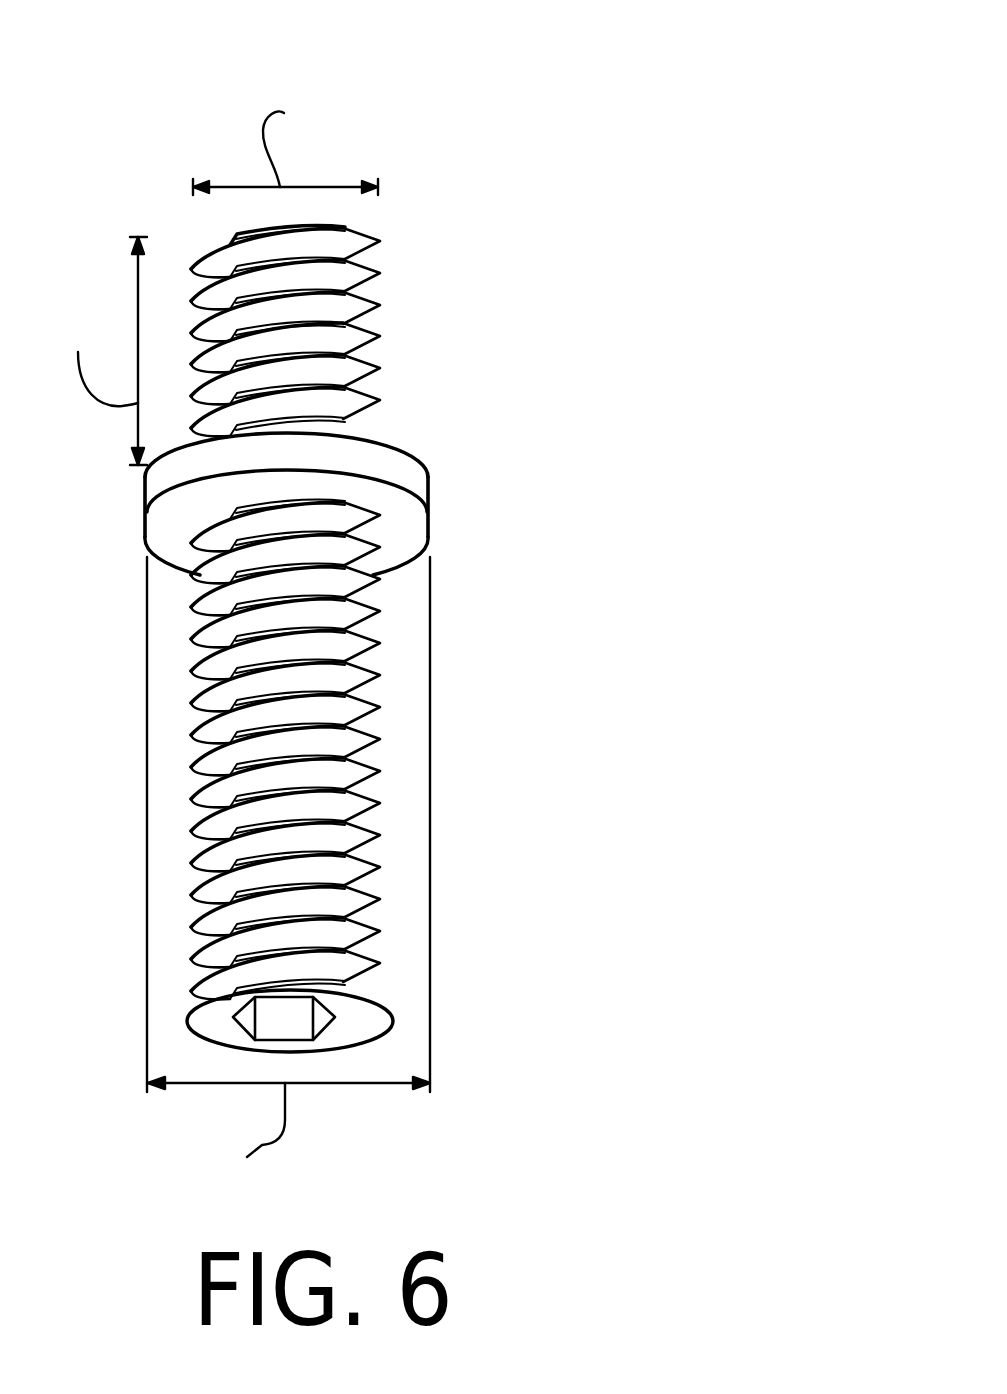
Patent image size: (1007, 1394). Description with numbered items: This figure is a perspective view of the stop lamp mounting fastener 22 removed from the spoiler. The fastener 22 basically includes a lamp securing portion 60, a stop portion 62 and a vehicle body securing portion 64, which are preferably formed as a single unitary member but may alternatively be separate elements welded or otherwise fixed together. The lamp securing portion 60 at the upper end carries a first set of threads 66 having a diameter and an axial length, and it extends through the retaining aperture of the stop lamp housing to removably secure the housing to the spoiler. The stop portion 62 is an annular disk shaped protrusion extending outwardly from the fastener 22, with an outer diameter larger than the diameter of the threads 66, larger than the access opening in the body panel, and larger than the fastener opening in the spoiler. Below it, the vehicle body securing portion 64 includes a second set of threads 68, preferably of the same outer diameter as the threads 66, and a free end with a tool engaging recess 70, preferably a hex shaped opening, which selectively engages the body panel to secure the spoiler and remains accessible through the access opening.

The stop lamp mounting fastener 22 is at (528, 68).
The lamp securing portion 60 is at (380, 239).
The stop portion 62 is at (403, 483).
The vehicle body securing portion 64 is at (380, 862).
The first set of threads 66 is at (345, 307).
The second set of threads 68 is at (340, 733).
The tool engaging recess 70 is at (292, 1008).